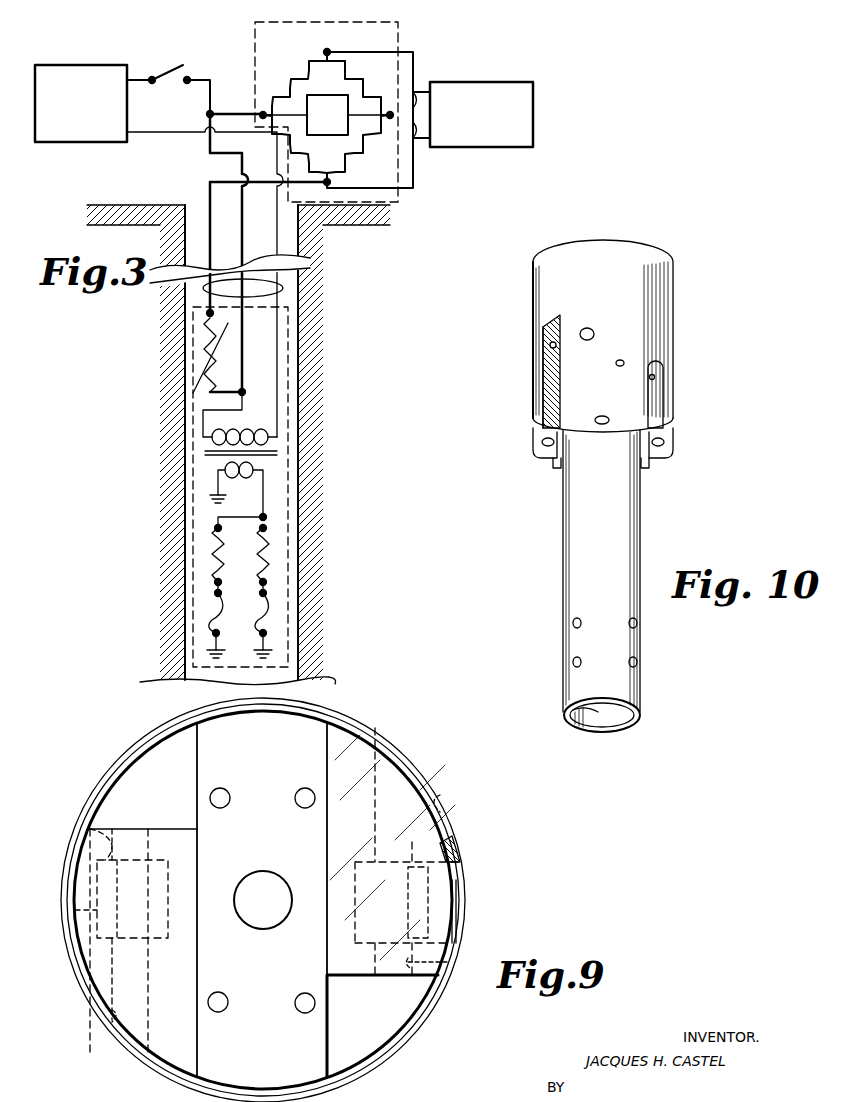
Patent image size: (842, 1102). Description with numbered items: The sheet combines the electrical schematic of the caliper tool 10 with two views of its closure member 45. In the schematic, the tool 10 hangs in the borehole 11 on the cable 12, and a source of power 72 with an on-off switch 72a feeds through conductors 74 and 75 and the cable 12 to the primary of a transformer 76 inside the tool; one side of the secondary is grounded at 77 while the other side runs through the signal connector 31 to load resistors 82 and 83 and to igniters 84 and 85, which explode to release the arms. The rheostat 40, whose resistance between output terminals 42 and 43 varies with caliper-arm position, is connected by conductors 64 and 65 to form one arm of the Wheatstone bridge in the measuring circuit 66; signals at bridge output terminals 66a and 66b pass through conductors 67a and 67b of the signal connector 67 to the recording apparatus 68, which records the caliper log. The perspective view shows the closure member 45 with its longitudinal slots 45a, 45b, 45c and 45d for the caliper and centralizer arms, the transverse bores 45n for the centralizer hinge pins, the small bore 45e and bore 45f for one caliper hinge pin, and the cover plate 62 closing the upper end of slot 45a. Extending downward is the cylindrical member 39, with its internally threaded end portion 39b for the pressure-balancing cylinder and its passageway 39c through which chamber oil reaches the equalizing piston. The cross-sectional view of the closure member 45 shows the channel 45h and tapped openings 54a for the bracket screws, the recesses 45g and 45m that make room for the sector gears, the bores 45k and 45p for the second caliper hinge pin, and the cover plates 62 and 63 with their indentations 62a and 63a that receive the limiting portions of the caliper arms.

In FIG. 3, the caliper tool 10 is at (310, 376).
In FIG. 3, the borehole 11 is at (195, 218).
In FIG. 3, the cable 12 is at (240, 473).
In FIG. 3, the signal connector 31 is at (264, 494).
In FIG. 10, the cylindrical member 39 is at (632, 538).
In FIG. 10, the internally threaded end portion 39b is at (604, 722).
In FIG. 9, the passageway 39c is at (256, 924).
In FIG. 3, the potentiometer or rheostat 40 is at (204, 345).
In FIG. 3, the output terminal 42 is at (244, 390).
In FIG. 3, the output terminal 43 is at (214, 314).
In FIG. 10, the closure member 45 is at (664, 306).
In FIG. 9, the closure member 45 is at (362, 722).
In FIG. 10, the longitudinal slot 45a is at (552, 366).
In FIG. 9, the longitudinal slot 45a is at (62, 875).
In FIG. 10, the longitudinal slot 45b is at (647, 462).
In FIG. 9, the longitudinal slot 45b is at (440, 945).
In FIG. 10, the longitudinal slot 45c is at (556, 452).
In FIG. 10, the longitudinal slot 45d is at (656, 392).
In FIG. 10, the small bore 45e is at (590, 330).
In FIG. 9, the small bore 45e is at (110, 1010).
In FIG. 10, the bore 45f is at (551, 344).
In FIG. 9, the bore 45f is at (80, 829).
In FIG. 9, the recess 45g is at (160, 752).
In FIG. 9, the channel 45h is at (310, 730).
In FIG. 9, the horizontal bore 45k is at (438, 796).
In FIG. 9, the recess 45m is at (383, 1013).
In FIG. 10, the transverse bores 45n is at (654, 376).
In FIG. 9, the bore 45p is at (448, 964).
In FIG. 9, the tapped openings 54a is at (300, 794).
In FIG. 10, the cover plate 62 is at (548, 320).
In FIG. 9, the cover plate 62 is at (105, 965).
In FIG. 9, the indentation 62a is at (88, 917).
In FIG. 9, the cover plate 63 is at (355, 760).
In FIG. 9, the indentation 63a is at (452, 878).
In FIG. 3, the conductor 64 is at (243, 162).
In FIG. 3, the conductor 65 is at (209, 180).
In FIG. 3, the measuring circuit 66 is at (253, 44).
In FIG. 3, the bridge output terminal 66a is at (322, 52).
In FIG. 3, the bridge output terminal 66b is at (324, 180).
In FIG. 3, the signal connector 67 is at (420, 108).
In FIG. 3, the conductor 67a is at (385, 44).
In FIG. 3, the conductor 67b is at (381, 186).
In FIG. 3, the recording apparatus 68 is at (521, 82).
In FIG. 3, the source of power 72 is at (122, 70).
In FIG. 3, the on-off switch 72a is at (168, 68).
In FIG. 3, the conductor 74 is at (200, 78).
In FIG. 3, the conductor 75 is at (168, 132).
In FIG. 3, the transformer 76 is at (279, 452).
In FIG. 3, the ground connection 77 is at (216, 488).
In FIG. 3, the load resistor 82 is at (229, 555).
In FIG. 3, the load resistor 83 is at (258, 560).
In FIG. 3, the igniter 84 is at (222, 604).
In FIG. 3, the igniter 85 is at (258, 616).